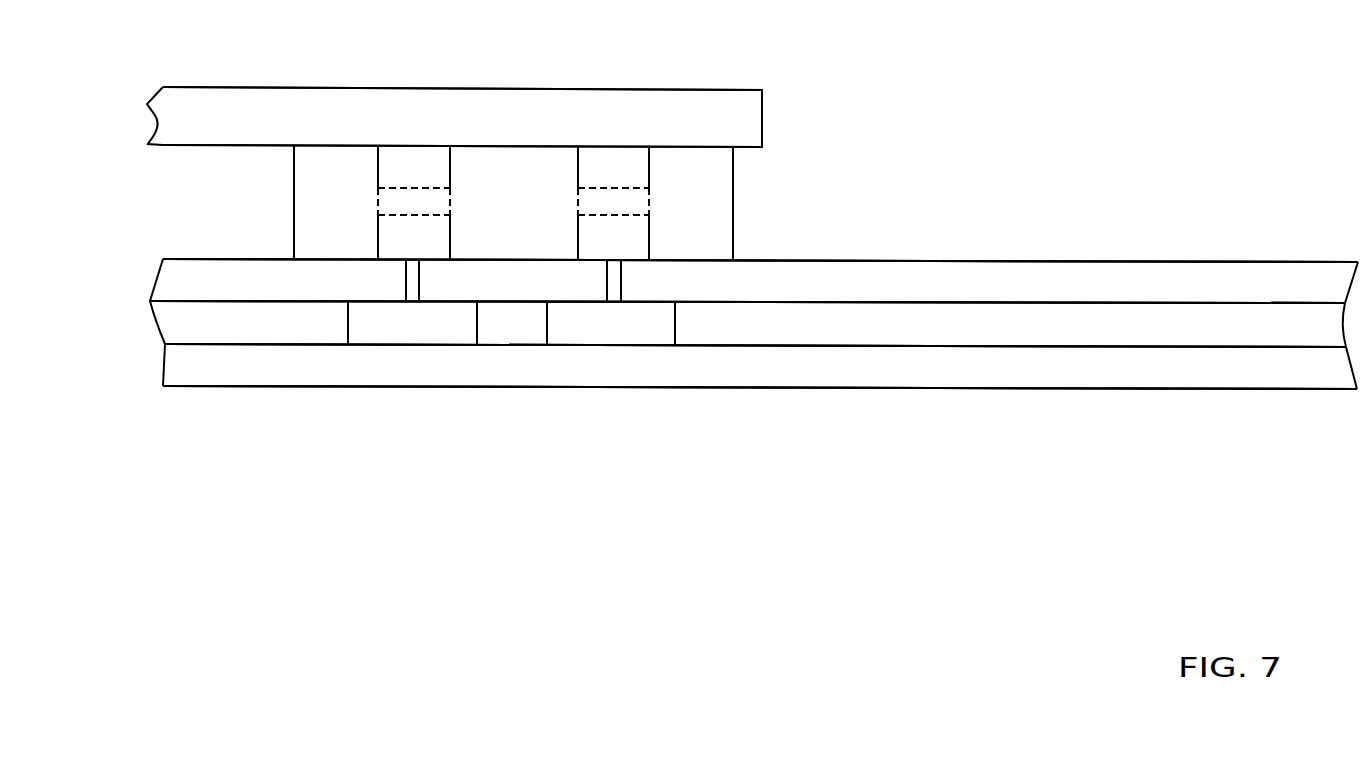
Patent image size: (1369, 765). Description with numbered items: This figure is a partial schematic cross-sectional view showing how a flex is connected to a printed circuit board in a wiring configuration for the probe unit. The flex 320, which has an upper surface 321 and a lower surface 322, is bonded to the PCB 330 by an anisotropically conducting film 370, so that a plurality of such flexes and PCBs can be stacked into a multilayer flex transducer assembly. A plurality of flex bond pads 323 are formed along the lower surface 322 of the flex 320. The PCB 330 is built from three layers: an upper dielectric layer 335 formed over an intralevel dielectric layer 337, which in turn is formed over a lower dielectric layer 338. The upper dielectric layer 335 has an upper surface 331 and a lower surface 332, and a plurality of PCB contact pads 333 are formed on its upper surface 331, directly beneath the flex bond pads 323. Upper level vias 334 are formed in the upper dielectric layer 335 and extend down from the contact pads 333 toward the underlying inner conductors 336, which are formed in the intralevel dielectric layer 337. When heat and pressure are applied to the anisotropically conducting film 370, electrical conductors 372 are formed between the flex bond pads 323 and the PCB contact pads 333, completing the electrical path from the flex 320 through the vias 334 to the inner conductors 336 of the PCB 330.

The flex 320 is at (321, 121).
The upper surface 321 is at (747, 90).
The lower surface 322 is at (747, 148).
The anisotropically conducting film 370 is at (358, 202).
The flex bond pads 323 is at (428, 177).
The electrical conductors 372 is at (437, 204).
The PCB contact pads 333 is at (428, 248).
The printed circuit board 330 is at (122, 272).
The upper surface 331 is at (1192, 260).
The lower surface 332 is at (1130, 389).
The upper level vias 334 is at (622, 273).
The upper dielectric layer 335 is at (1110, 294).
The inner conductors 336 is at (428, 332).
The intralevel dielectric layer 337 is at (918, 332).
The lower dielectric layer 338 is at (1067, 381).